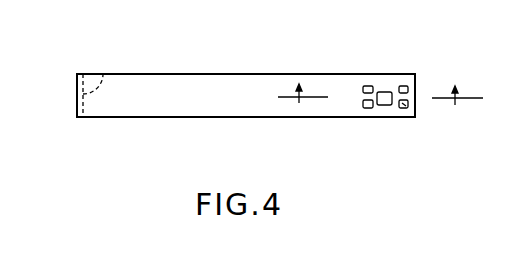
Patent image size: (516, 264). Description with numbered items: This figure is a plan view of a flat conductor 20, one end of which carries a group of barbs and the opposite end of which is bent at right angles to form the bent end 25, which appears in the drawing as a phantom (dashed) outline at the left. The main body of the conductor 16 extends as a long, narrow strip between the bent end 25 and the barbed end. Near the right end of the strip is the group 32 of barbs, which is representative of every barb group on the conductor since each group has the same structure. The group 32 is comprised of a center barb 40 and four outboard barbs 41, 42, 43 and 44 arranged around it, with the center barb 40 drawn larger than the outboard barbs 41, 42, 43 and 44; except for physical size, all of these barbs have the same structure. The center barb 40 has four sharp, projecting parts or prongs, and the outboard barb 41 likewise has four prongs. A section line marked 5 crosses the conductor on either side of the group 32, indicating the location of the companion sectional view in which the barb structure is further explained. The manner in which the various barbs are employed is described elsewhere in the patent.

The strip body 16 is at (202, 106).
The conductor 20 is at (183, 74).
The bent end 25 is at (103, 74).
The group 32 is at (380, 117).
The center barb 40 is at (385, 92).
The outboard barb 41 is at (365, 87).
The outboard barb 42 is at (365, 108).
The outboard barb 43 is at (407, 108).
The outboard barb 44 is at (406, 87).
The section line 5- 5 is at (380, 96).